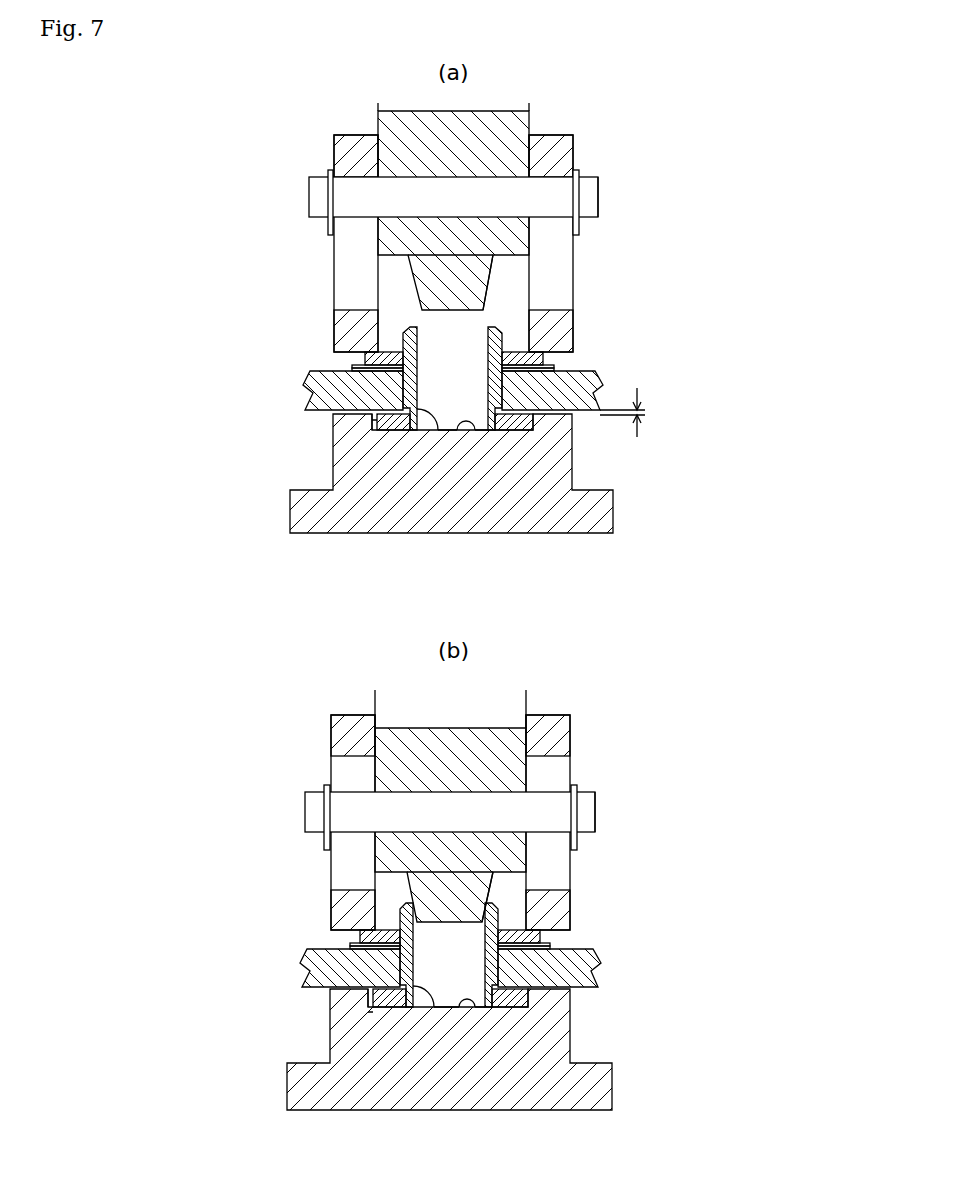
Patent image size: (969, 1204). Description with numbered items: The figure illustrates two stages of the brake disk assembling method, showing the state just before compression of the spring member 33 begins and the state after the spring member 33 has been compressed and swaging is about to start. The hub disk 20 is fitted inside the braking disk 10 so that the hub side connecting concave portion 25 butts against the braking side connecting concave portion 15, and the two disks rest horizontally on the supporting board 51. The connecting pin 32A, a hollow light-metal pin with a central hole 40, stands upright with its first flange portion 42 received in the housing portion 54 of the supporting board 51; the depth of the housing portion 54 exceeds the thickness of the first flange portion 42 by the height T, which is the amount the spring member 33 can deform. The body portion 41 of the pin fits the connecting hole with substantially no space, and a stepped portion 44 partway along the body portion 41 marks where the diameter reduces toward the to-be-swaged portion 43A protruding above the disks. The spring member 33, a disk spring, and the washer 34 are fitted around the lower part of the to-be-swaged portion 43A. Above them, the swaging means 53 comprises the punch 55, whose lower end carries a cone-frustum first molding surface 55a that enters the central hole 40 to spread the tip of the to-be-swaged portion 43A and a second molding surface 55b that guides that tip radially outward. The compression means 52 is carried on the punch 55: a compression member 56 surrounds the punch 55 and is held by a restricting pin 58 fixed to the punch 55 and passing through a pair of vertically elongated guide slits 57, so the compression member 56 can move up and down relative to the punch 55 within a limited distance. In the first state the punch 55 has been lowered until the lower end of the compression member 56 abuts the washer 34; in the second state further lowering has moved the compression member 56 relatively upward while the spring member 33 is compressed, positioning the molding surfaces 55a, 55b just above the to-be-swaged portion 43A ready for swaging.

The braking disk 10 is at (592, 385).
The hub disk 20 is at (315, 383).
The braking side connecting concave portion 15 is at (490, 420).
The hub side connecting concave portion 25 is at (407, 420).
The connecting pin 32A is at (377, 420).
The spring member 33 is at (550, 366).
The washer 34 is at (520, 334).
The central hole 40 is at (443, 435).
The body portion 41 is at (537, 425).
The first flange portion 42 is at (366, 437).
The to-be-swaged portion 43A is at (390, 351).
The stepped portion 44 is at (403, 371).
The supporting board 51 is at (562, 448).
The compression means 52 is at (612, 192).
The swaging means 53 is at (343, 247).
The housing portion 54 is at (480, 433).
The punch 55 is at (540, 168).
The first molding surface 55a is at (522, 289).
The second molding surface 55b is at (515, 260).
The compression member 56 is at (338, 155).
The guide slit 57 is at (347, 310).
The restricting pin 58 is at (310, 198).
The height T is at (630, 412).